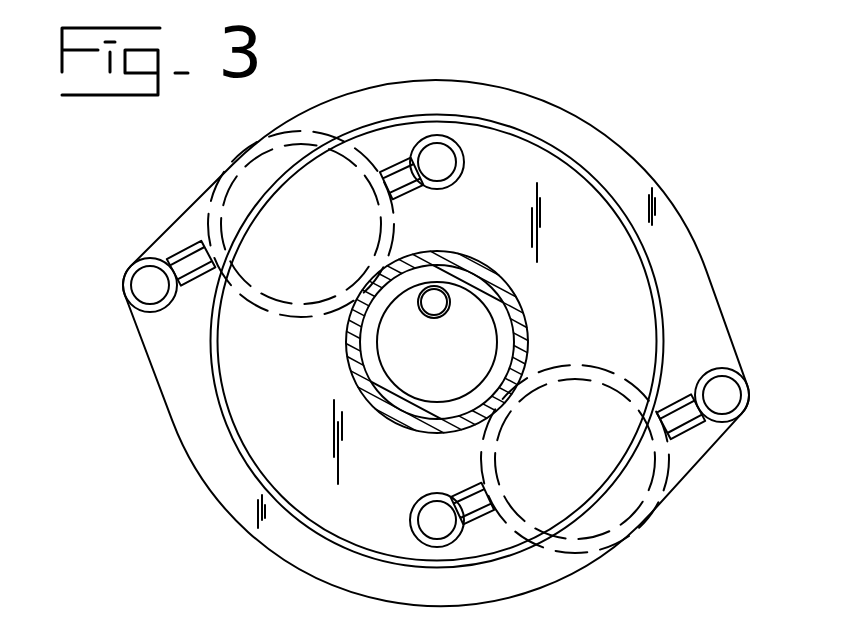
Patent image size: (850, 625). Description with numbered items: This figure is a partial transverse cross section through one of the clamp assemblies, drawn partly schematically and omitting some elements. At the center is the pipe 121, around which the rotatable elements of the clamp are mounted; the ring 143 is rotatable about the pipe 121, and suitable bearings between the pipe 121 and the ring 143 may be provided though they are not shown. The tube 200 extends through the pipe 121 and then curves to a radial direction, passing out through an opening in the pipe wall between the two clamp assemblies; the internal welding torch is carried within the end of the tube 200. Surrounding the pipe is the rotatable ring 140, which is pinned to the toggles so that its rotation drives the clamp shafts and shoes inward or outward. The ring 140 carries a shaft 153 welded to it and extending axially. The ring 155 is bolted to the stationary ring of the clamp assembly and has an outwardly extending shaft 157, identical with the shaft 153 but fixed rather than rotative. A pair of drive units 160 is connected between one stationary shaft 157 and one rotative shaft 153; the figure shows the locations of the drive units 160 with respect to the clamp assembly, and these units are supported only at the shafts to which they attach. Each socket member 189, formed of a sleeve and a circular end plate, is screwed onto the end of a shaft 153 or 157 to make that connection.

The pipe 121 is at (518, 305).
The ring 140 is at (655, 262).
The ring 143 is at (352, 362).
The shaft 153 is at (464, 163).
The ring 155 is at (640, 163).
The shaft 157 is at (137, 300).
The drive unit 160 is at (215, 172).
The socket member 189 is at (123, 284).
The tube 200 is at (437, 318).